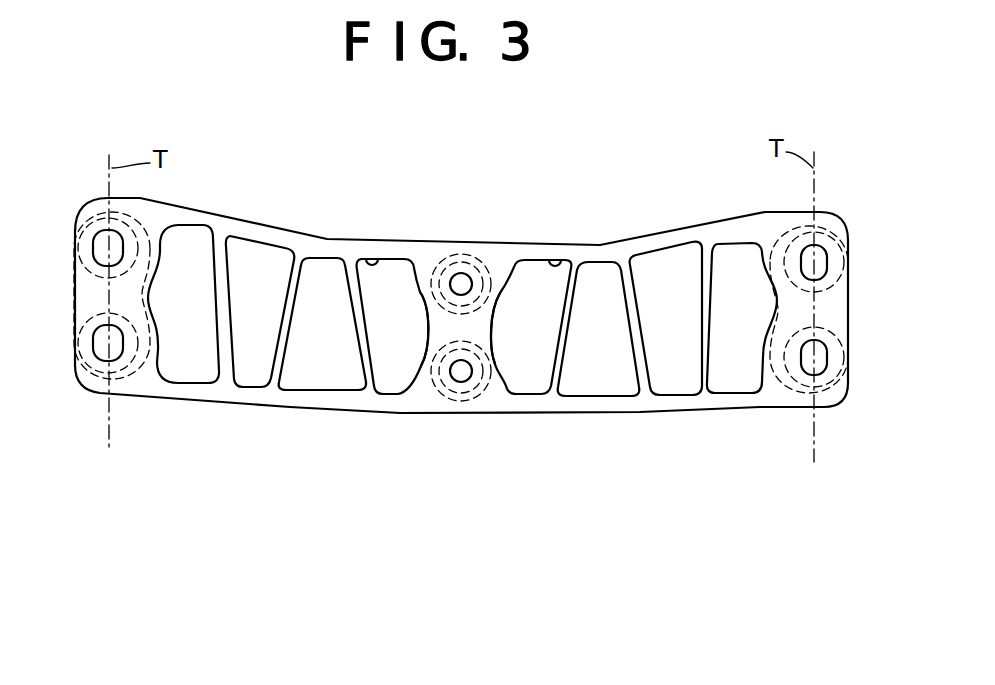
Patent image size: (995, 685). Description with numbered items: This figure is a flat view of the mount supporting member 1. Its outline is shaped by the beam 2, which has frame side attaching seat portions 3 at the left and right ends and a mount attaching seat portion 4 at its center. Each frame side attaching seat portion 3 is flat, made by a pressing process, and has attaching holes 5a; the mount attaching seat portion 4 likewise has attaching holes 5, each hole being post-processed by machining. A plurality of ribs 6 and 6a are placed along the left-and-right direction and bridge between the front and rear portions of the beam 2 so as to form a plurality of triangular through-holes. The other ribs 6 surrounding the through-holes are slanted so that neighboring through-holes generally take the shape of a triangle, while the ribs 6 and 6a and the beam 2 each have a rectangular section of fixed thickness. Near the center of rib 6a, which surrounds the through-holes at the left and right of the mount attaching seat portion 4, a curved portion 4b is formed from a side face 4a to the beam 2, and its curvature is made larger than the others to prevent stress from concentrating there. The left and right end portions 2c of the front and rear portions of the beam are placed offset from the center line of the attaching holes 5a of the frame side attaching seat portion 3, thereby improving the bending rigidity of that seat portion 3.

The mount supporting member 1 is at (724, 218).
The beam 2 is at (628, 415).
The left and right end portions of the front and rear portions of the beam 2c is at (101, 207).
The frame side attaching seat portion 3 is at (137, 396).
The mount attaching seat portion 4 is at (483, 252).
The side face 4a is at (404, 260).
The curved portion 4b is at (364, 256).
The attaching hole 5 is at (462, 284).
The attaching holes of the frame side attaching seat portion 5a is at (100, 345).
The ribs 6 is at (215, 317).
The rib 6a is at (362, 337).